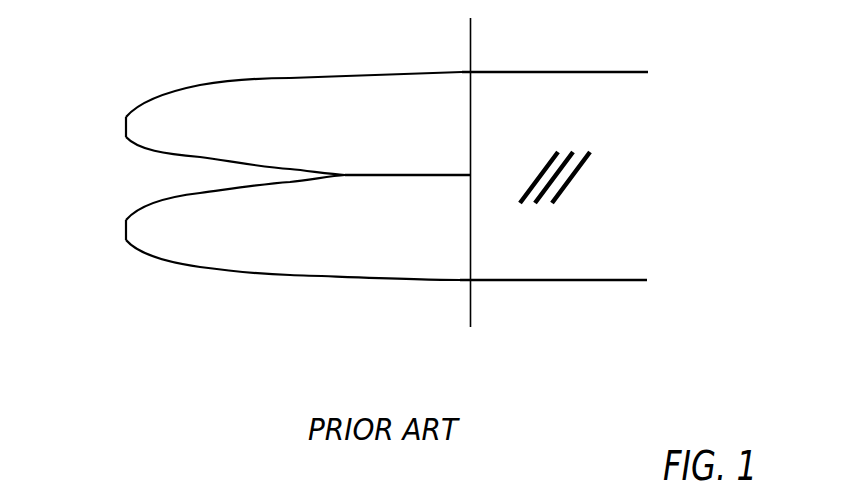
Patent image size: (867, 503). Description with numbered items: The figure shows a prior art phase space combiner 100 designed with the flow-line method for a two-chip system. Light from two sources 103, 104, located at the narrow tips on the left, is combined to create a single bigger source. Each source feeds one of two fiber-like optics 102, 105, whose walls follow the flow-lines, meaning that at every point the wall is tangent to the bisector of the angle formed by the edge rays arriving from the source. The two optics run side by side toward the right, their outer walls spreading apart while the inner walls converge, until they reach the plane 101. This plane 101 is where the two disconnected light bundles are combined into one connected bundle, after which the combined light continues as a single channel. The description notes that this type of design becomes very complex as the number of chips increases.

The phase space combiner 100 is at (496, 190).
The plane 101 is at (475, 105).
The fiber-like optic 102 is at (157, 96).
The source 103 is at (123, 122).
The source 104 is at (120, 227).
The fiber-like optic 105 is at (220, 270).